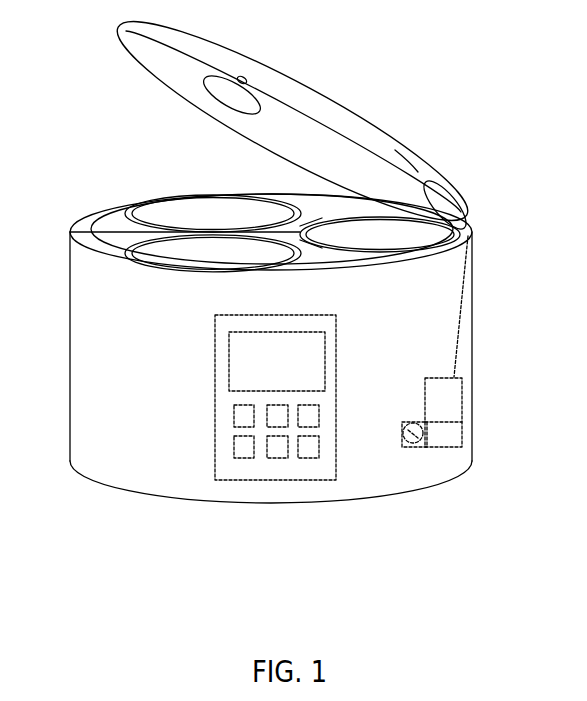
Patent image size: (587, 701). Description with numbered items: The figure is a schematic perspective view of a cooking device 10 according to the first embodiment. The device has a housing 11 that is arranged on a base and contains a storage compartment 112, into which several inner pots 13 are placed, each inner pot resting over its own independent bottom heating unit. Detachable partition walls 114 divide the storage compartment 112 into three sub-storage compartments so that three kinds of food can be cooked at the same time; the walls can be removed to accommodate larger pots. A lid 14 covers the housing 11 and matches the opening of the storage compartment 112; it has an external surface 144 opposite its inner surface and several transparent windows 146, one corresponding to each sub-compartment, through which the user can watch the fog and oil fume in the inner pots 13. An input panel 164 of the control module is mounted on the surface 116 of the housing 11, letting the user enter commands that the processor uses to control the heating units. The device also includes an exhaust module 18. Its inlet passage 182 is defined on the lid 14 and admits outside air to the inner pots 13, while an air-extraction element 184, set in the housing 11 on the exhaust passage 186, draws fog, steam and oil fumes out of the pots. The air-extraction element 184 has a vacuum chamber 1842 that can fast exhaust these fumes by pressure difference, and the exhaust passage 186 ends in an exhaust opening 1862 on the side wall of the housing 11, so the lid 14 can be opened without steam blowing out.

The cooking device 10 is at (450, 614).
The housing 11 is at (476, 312).
The storage compartment 112 is at (127, 207).
The partition walls 114 is at (97, 229).
The surface 116 is at (466, 341).
The inner pots 13 is at (155, 196).
The lid 14 is at (400, 157).
The external surface 144 is at (432, 158).
The transparent windows 146 is at (222, 88).
The input panel 164 is at (271, 481).
The exhaust module 18 is at (478, 408).
The inlet passage 182 is at (260, 70).
The air-extraction element 184 is at (430, 442).
The vacuum chamber 1842 is at (457, 432).
The exhaust passage 186 is at (470, 366).
The exhaust opening 1862 is at (462, 433).